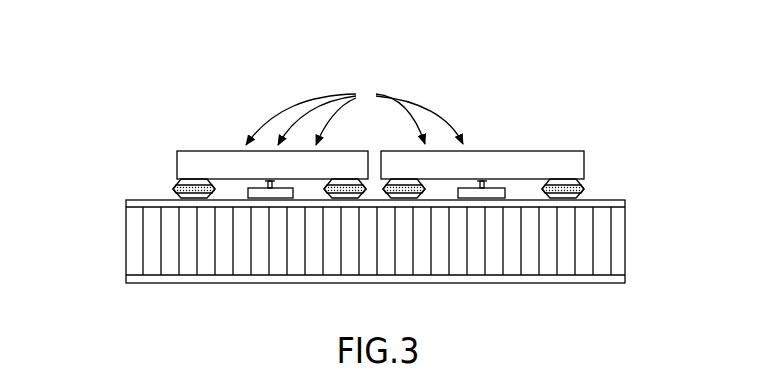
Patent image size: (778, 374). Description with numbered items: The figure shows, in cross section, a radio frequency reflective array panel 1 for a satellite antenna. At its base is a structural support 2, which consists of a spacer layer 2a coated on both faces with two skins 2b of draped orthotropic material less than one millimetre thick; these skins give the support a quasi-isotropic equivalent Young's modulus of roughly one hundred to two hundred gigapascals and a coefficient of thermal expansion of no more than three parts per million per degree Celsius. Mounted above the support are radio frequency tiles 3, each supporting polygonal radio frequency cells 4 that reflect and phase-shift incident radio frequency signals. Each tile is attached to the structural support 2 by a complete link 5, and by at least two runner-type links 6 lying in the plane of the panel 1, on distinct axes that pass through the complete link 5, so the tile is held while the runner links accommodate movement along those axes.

The radio frequency reflective array panel 1 is at (197, 87).
The structural support 2 is at (110, 237).
The spacer layer 2a is at (155, 268).
The skins 2b is at (625, 202).
The radio frequency tiles 3 is at (551, 151).
The polygonal radio frequency cells 4 is at (354, 115).
The complete link 5 is at (475, 194).
The runner-type links 6 is at (323, 185).